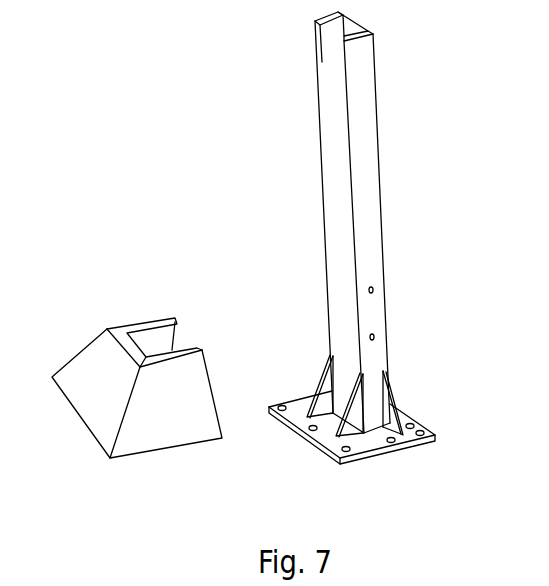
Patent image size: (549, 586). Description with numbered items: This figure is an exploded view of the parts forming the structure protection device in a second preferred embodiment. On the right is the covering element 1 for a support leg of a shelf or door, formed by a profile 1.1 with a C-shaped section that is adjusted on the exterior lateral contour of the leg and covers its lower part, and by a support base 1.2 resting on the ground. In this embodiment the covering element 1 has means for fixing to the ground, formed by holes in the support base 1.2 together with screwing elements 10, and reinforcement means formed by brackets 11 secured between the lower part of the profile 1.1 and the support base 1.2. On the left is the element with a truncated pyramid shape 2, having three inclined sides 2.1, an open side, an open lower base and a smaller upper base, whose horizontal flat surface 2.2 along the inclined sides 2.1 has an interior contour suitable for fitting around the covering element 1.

The covering element 1 is at (287, 160).
The profile 1.1 is at (338, 218).
The support base 1.2 is at (298, 410).
The screwing elements 10 is at (422, 431).
The brackets 11 is at (353, 410).
The element with truncated pyramid shape 2 is at (213, 457).
The inclined sides 2.1 is at (152, 388).
The horizontal flat surface 2.2 is at (124, 332).